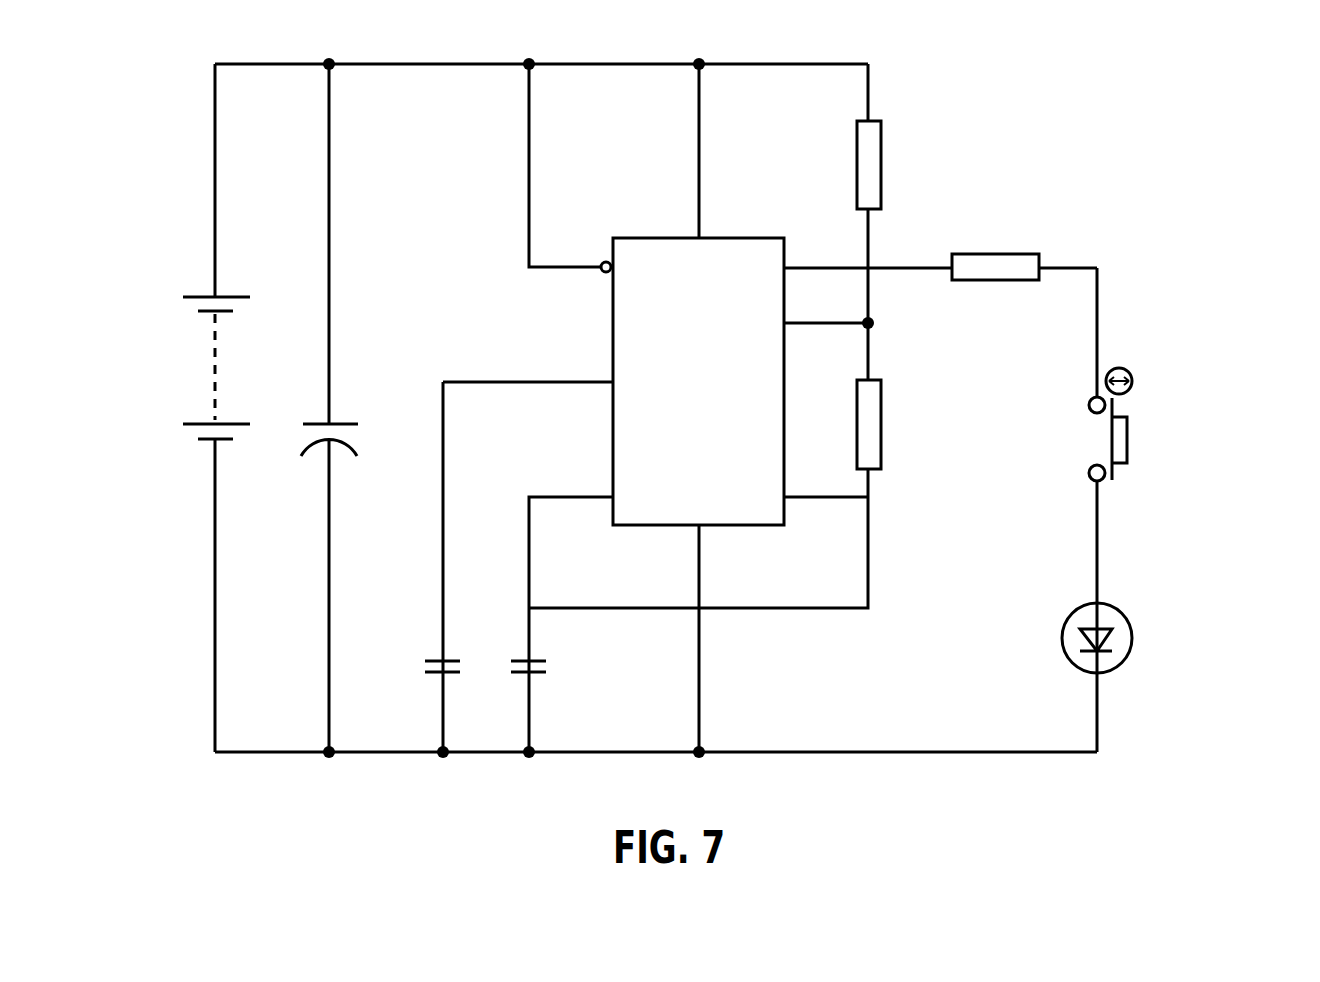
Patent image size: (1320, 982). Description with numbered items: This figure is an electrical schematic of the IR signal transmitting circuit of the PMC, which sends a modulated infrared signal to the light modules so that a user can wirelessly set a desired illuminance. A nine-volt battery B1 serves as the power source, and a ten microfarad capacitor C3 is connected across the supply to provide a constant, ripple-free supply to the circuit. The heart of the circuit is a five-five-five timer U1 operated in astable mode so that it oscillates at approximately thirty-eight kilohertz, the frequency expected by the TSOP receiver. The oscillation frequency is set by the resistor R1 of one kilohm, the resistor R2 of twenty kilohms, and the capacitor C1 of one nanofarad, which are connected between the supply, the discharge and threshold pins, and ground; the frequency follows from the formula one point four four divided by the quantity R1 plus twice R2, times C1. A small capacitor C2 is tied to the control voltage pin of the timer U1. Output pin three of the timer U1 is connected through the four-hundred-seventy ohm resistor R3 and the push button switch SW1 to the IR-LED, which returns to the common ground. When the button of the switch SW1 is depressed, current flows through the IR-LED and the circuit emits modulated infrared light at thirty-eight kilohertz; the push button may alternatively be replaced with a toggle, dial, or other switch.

The power source B1 is at (237, 321).
The 10 uF capacitor C3 is at (355, 408).
The 555 timer U1 is at (713, 370).
The resistor R1 is at (890, 166).
The resistor R2 is at (901, 424).
The 470 ohm resistor R3 is at (995, 271).
The push button switch SW1 is at (1110, 424).
The capacitor C2 is at (406, 682).
The capacitor C1 is at (554, 678).
The IR LED IR-LED is at (1141, 635).